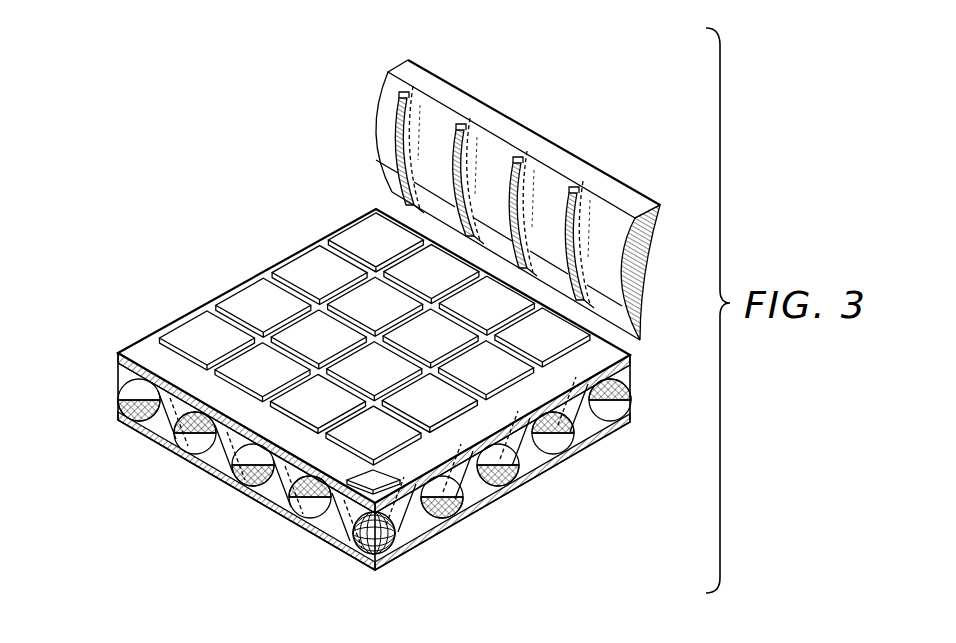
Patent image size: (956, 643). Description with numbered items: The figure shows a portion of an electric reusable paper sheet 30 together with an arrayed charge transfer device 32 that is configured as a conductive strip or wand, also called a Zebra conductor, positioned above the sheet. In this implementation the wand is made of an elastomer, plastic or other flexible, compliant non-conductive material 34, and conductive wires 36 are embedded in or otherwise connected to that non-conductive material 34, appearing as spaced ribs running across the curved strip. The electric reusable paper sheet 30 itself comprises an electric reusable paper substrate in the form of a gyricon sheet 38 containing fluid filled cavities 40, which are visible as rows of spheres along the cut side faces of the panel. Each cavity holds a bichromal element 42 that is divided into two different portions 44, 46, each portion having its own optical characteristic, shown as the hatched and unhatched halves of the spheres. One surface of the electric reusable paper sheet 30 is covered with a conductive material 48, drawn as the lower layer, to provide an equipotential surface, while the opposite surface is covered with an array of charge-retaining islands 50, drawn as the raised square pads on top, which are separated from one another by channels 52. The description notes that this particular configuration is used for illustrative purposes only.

The electric reusable paper sheet 30 is at (208, 252).
The arrayed charge transfer device 32 is at (352, 118).
The non-conductive material 34 is at (388, 108).
The conductive wires 36 is at (428, 128).
The gyricon sheet 38 is at (118, 368).
The fluid filled cavities 40 is at (150, 412).
The bichromal element 42 is at (140, 393).
The first portion of bichromal element 44 is at (130, 399).
The second portion of bichromal element 46 is at (142, 430).
The conductive material 48 is at (122, 427).
The charge-retaining islands 50 is at (600, 357).
The channels 52 is at (562, 372).